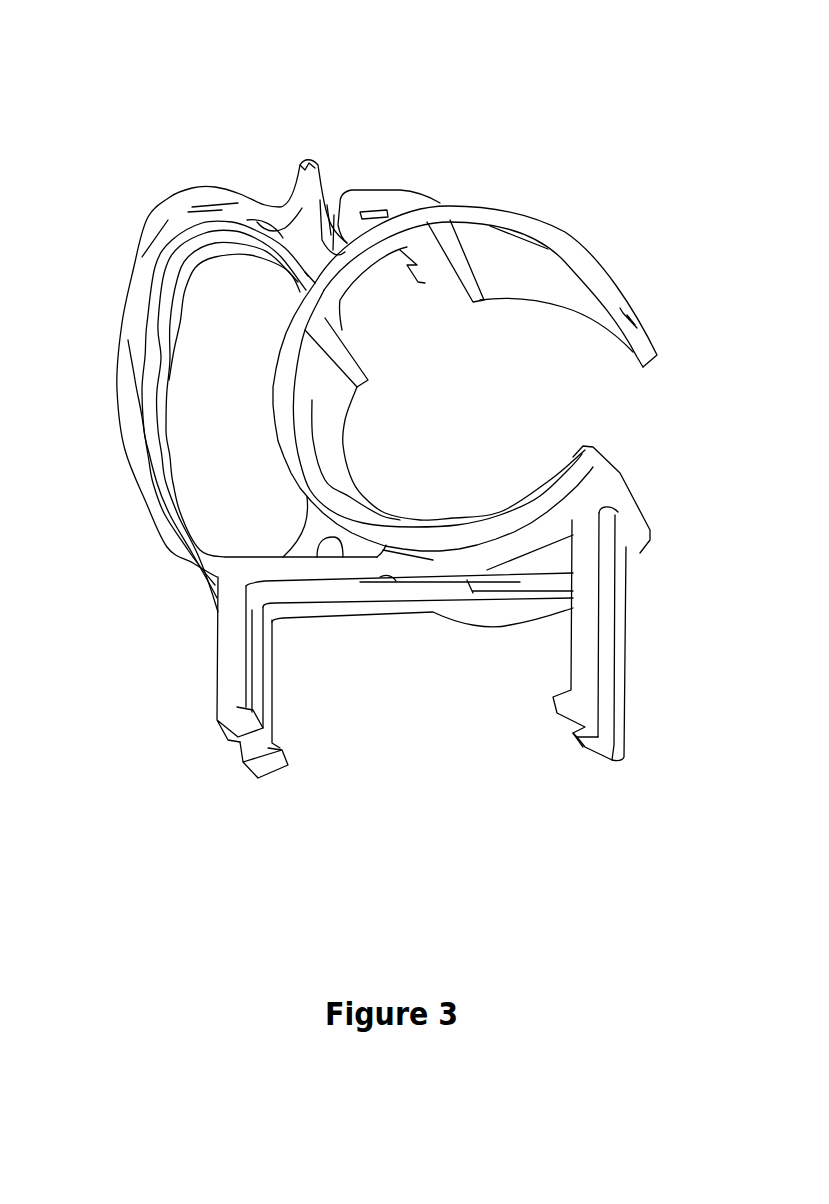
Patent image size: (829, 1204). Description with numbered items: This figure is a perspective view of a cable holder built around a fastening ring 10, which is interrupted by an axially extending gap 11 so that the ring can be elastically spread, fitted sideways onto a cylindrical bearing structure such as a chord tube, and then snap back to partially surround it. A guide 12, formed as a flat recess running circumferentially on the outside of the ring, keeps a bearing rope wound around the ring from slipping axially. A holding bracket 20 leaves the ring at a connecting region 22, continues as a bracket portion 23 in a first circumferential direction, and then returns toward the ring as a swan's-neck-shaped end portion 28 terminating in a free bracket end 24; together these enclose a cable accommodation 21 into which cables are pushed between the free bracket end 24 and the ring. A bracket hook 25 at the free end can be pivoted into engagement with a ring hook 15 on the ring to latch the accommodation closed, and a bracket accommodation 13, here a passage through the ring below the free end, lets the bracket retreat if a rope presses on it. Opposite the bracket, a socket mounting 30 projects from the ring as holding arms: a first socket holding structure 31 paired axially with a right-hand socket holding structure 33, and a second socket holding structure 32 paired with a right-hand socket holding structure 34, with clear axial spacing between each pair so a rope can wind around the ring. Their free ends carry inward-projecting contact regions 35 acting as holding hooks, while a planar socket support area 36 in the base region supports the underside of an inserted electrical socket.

The fastening ring 10 is at (513, 341).
The gap 11 is at (642, 405).
The guide 12 is at (620, 500).
The bracket accommodation 13 is at (370, 288).
The ring hook 15 is at (363, 200).
The holding bracket 20 is at (228, 313).
The cable accommodation 21 is at (276, 399).
The connecting region 22 is at (388, 563).
The bracket portion 23 is at (130, 330).
The free bracket end 24 is at (305, 152).
The bracket hook 25 is at (322, 172).
The end portion 28 is at (282, 212).
The socket mounting 30 is at (430, 701).
The first socket holding structure 31 is at (588, 598).
The second socket holding structure 32 is at (232, 668).
The axially right-hand socket holding structure 33 is at (618, 660).
The axially right-hand socket holding structure 34 is at (267, 653).
The contact region 35 is at (283, 757).
The socket support area 36 is at (375, 607).